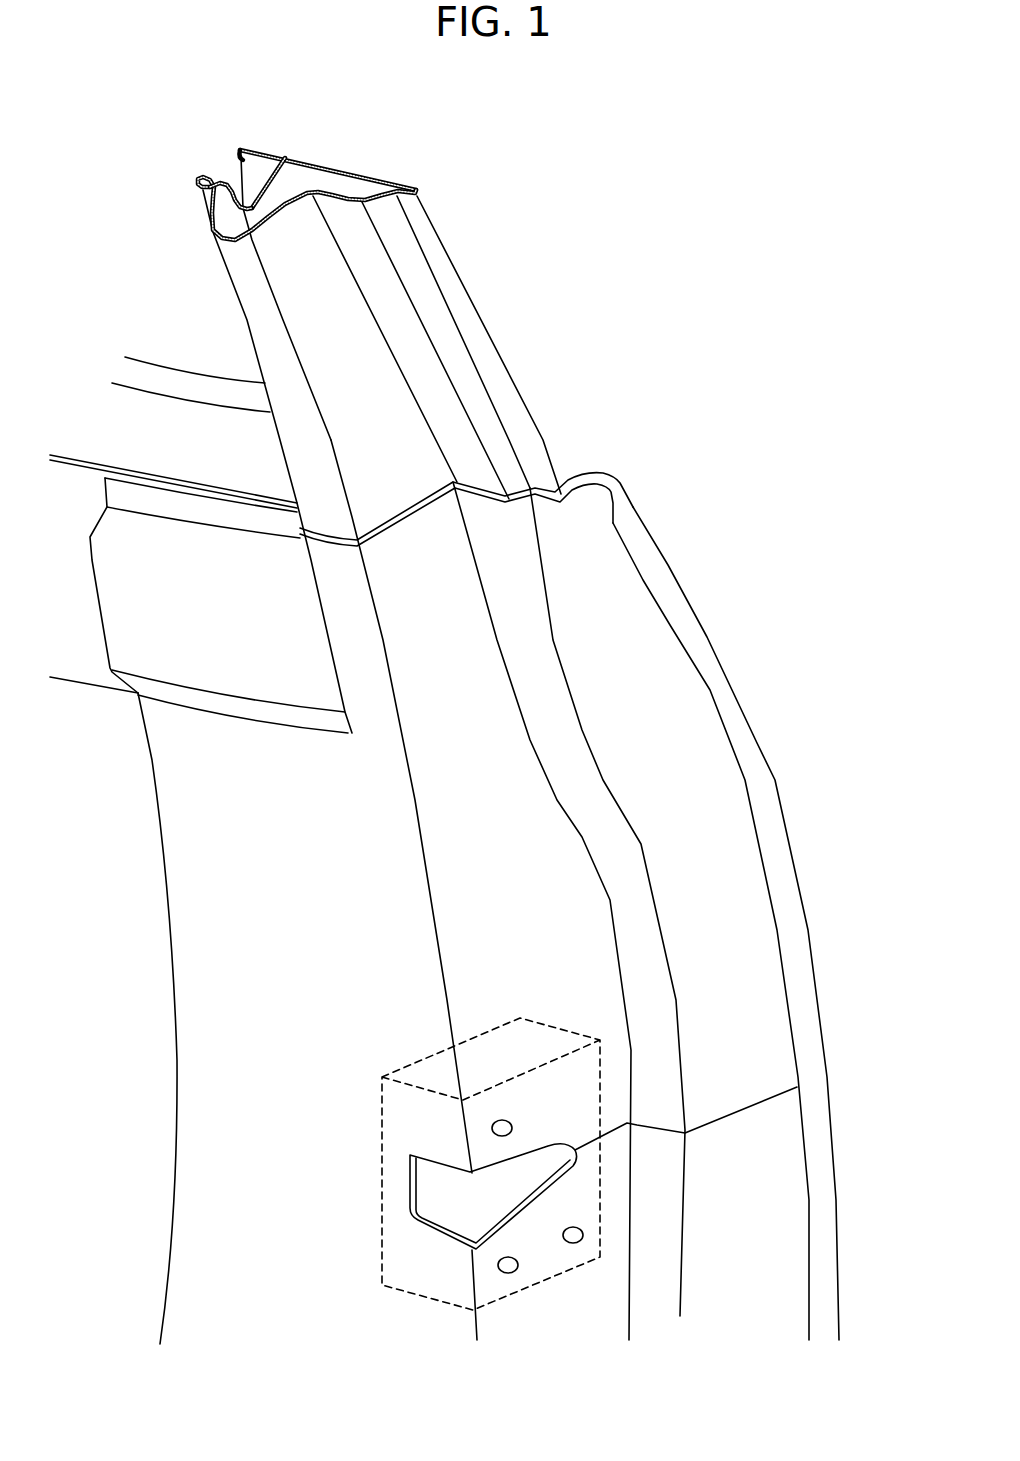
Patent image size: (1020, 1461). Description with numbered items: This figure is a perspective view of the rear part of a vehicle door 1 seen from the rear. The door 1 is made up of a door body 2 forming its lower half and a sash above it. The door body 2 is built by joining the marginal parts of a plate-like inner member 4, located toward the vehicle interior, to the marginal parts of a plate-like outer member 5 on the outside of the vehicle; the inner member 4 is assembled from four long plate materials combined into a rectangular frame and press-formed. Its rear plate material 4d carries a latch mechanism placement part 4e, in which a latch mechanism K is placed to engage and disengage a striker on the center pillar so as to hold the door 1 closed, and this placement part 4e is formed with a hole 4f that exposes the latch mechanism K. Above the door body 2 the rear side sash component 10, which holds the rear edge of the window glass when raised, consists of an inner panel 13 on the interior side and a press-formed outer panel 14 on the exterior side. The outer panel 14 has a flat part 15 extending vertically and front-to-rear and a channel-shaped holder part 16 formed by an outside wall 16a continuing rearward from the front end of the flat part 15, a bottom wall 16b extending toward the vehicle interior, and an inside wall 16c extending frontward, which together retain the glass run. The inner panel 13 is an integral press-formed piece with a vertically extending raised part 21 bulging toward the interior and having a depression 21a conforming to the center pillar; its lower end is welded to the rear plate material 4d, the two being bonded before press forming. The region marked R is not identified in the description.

The vehicle door 1 is at (725, 283).
The door body 2 is at (820, 640).
The inner member 4 is at (693, 741).
The rear plate material 4d is at (760, 935).
The latch mechanism placement part 4e is at (523, 1240).
The hole 4f is at (408, 1197).
The outer member 5 is at (733, 682).
The rear side sash component 10 is at (512, 295).
The inner panel 13 is at (229, 280).
The outer panel 14 is at (452, 248).
The flat part 15 is at (357, 157).
The holder part 16 is at (228, 180).
The outside wall 16a is at (241, 146).
The bottom wall 16b is at (275, 192).
The inside wall 16c is at (212, 192).
The raised part 21 is at (262, 325).
The depression 21a is at (385, 367).
The latch mechanism K is at (382, 1100).
The door opening R is at (102, 856).